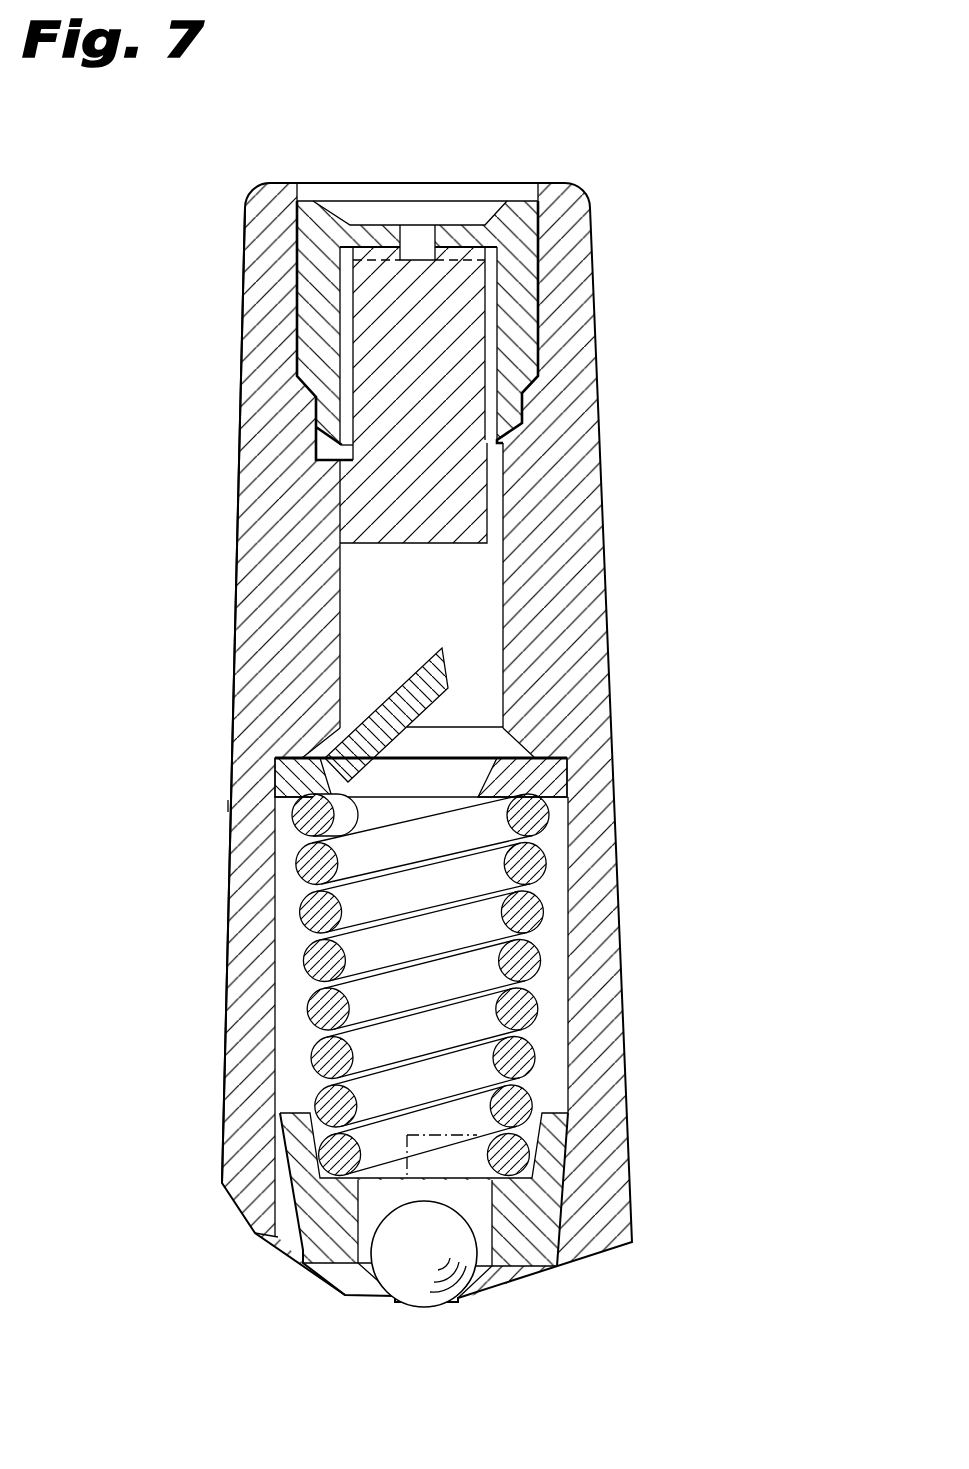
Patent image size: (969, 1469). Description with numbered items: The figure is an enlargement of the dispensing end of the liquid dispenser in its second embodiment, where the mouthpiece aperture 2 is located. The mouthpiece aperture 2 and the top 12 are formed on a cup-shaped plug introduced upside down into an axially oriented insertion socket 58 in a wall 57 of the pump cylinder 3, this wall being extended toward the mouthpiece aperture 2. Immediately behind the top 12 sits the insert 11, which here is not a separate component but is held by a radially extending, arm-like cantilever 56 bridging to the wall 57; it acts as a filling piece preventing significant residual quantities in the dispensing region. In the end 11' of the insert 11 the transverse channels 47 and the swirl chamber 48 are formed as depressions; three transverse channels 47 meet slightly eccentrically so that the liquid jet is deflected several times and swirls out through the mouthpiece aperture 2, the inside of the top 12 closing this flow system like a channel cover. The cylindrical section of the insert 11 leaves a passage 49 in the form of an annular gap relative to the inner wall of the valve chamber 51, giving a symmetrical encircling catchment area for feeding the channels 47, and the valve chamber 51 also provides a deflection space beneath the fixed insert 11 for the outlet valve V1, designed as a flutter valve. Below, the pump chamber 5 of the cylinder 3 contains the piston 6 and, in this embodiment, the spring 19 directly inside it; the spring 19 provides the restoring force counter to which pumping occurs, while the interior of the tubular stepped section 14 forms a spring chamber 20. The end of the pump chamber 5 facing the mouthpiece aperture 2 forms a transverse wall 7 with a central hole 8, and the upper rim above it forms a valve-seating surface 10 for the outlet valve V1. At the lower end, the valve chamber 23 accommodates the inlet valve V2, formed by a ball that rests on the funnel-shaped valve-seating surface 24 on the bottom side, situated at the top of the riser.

The mouthpiece aperture 2 is at (412, 238).
The cylinder 3 is at (250, 858).
The pump chamber 5 is at (553, 942).
The piston 6 is at (553, 1130).
The transverse wall 7 is at (523, 735).
The hole 8 is at (400, 782).
The valve-seating surface 10 is at (487, 782).
The insert 11 is at (525, 392).
The end of the insert 11' is at (536, 195).
The top 12 is at (440, 236).
The tubular stepped section 14 is at (228, 806).
The spring 19 is at (302, 912).
The spring chamber 20 is at (275, 968).
The valve chamber 23 is at (377, 1197).
The valve-seating surface 24 is at (460, 1290).
The transverse channels 47 is at (460, 245).
The swirl chamber 48 is at (428, 253).
The passage 49 is at (345, 368).
The valve chamber 51 is at (365, 687).
The cantilever 56 is at (340, 502).
The wall 57 is at (268, 623).
The insertion socket 58 is at (296, 286).
The outlet valve V1 is at (460, 710).
The inlet valve V2 is at (480, 1233).